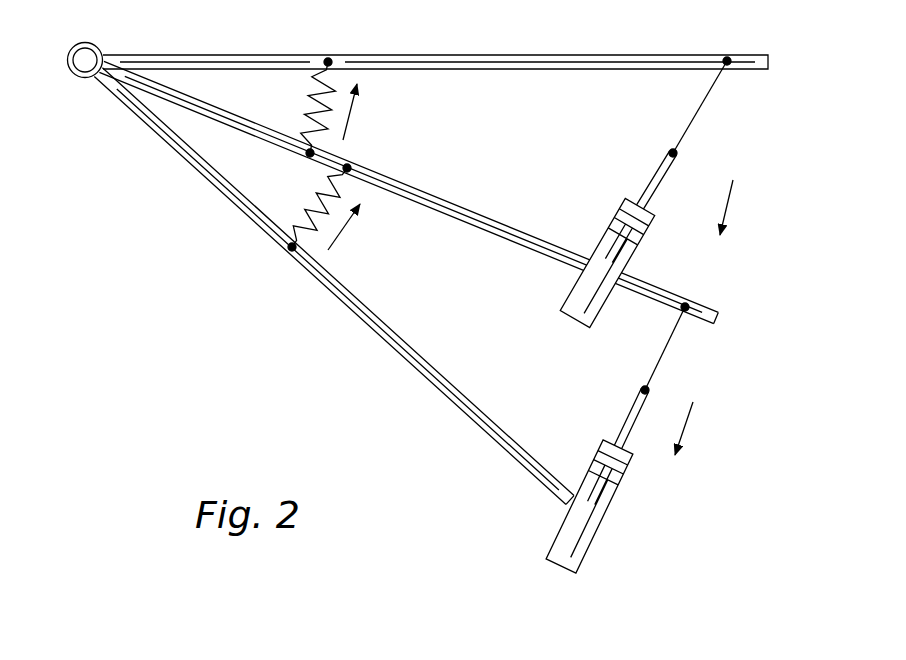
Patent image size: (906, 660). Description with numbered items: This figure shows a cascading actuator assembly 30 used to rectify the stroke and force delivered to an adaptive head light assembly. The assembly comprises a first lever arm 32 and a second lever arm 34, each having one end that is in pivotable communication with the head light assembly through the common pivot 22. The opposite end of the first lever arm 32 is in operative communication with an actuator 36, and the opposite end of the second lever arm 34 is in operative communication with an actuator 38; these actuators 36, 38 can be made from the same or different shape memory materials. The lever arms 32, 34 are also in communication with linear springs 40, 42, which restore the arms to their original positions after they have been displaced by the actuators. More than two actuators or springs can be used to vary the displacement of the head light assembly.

The pivot 22 is at (86, 62).
The linkage assembly 30 is at (178, 298).
The first arm 32 is at (443, 198).
The second arm 34 is at (386, 325).
The first actuator cylinder 36 is at (620, 237).
The second actuator cylinder 38 is at (582, 533).
The first spring 40 is at (307, 102).
The second spring 42 is at (315, 198).